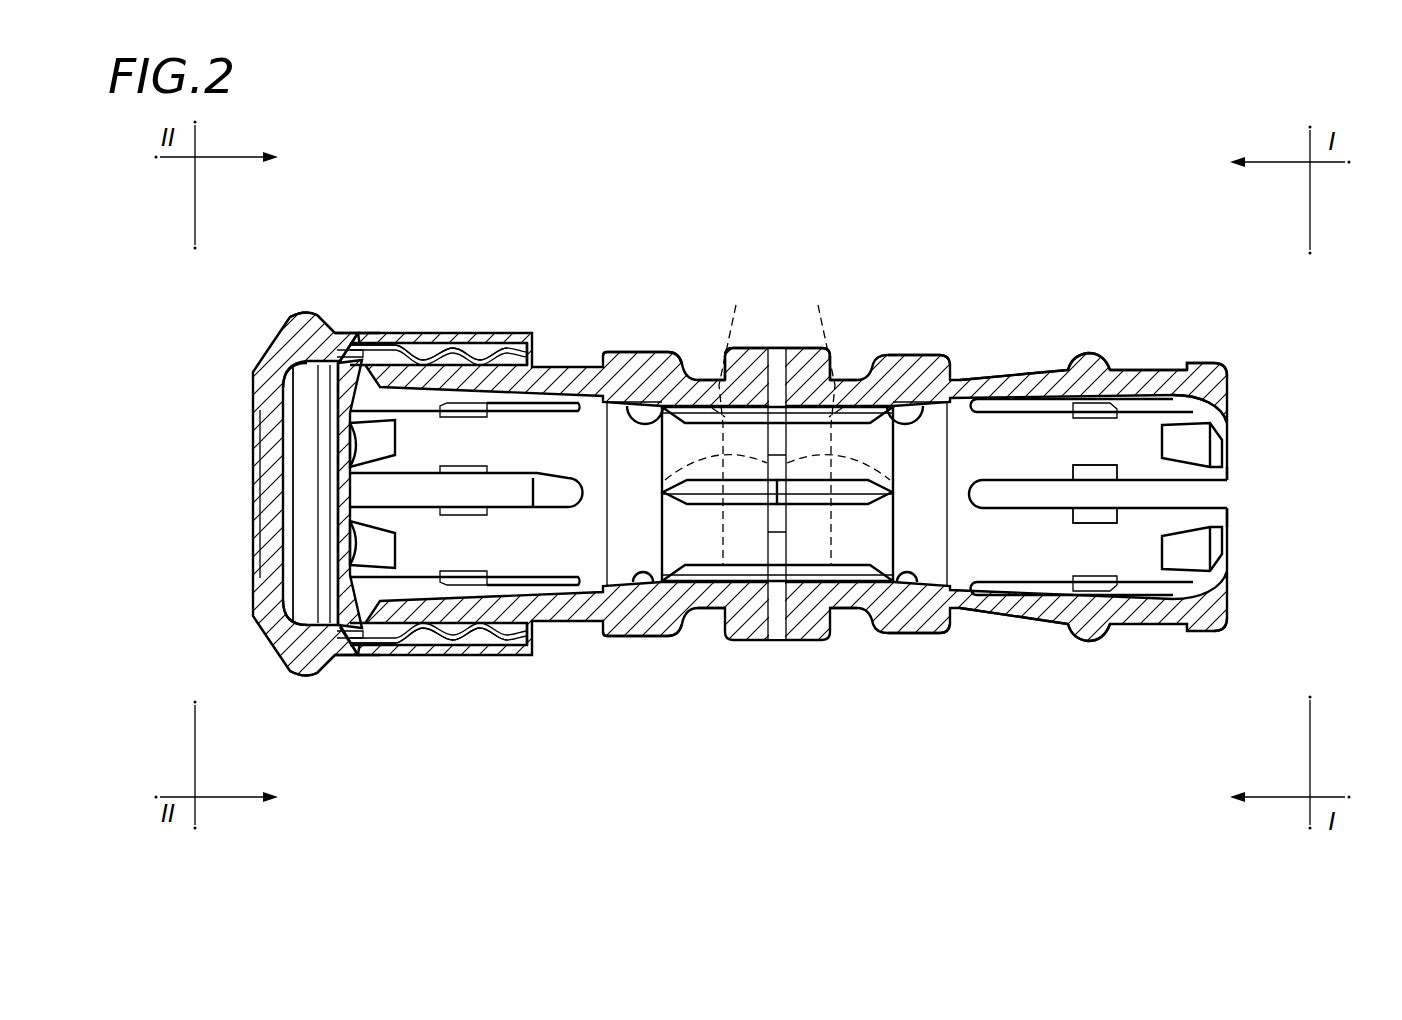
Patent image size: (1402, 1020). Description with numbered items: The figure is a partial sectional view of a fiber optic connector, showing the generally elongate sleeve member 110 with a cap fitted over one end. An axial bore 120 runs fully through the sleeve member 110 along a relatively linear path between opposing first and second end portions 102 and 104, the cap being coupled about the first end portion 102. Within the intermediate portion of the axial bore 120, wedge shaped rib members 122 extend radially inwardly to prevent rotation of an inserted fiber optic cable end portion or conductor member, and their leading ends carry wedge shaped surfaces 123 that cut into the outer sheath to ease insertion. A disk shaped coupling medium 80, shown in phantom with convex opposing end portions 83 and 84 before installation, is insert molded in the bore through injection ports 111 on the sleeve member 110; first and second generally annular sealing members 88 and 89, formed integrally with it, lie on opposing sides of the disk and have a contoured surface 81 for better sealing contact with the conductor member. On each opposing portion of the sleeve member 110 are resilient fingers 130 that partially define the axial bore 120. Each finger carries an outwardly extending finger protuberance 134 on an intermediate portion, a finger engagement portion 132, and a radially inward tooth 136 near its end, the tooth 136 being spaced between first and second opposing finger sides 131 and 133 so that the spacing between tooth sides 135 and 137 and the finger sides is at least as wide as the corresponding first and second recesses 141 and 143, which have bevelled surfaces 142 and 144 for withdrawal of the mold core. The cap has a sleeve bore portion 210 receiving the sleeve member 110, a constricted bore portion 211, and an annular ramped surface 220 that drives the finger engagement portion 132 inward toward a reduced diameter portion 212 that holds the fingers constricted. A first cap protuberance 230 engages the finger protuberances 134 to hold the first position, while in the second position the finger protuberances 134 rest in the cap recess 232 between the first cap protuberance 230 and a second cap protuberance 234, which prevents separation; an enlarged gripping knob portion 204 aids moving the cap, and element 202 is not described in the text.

The coupling medium 80 is at (777, 398).
The contoured surface 81 is at (777, 420).
The first end portion of the disk shaped portion 83 is at (664, 479).
The second end portion of the disk shaped portion 84 is at (892, 478).
The first generally annular sealing member 88 is at (750, 535).
The second generally annular sealing member 89 is at (813, 540).
The first end portion 102 is at (340, 438).
The second end portion 104 is at (1172, 493).
The sleeve member 110 is at (1017, 620).
The injection ports 111 is at (782, 613).
The axial bore 120 is at (654, 636).
The wedge shaped rib members 122 is at (710, 383).
The wedge shaped surfaces 123 is at (643, 355).
The resilient fingers 130 is at (503, 457).
The first side of the resilient finger 131 is at (1113, 465).
The finger engagement portion 132 is at (362, 335).
The second side of the resilient finger 133 is at (1155, 525).
The finger protuberance 134 is at (1083, 353).
The first side of the tooth 135 is at (1229, 421).
The tooth 136 is at (1229, 407).
The second side of the tooth 137 is at (1229, 476).
The first recess 141 is at (1060, 373).
The bevelled surface 142 is at (1127, 373).
The second recess 143 is at (1058, 624).
The bevelled surface 144 is at (1162, 425).
The upper arm of cover 202 is at (262, 378).
The gripping knob portion 204 is at (265, 640).
The sleeve bore portion 210 is at (383, 650).
The constricted bore portion 211 is at (283, 562).
The reduced diameter portion 212 is at (283, 385).
The ramped surface 220 is at (353, 318).
The first cap protuberance 230 is at (428, 343).
The cap recess 232 is at (470, 333).
The second cap protuberance 234 is at (512, 333).